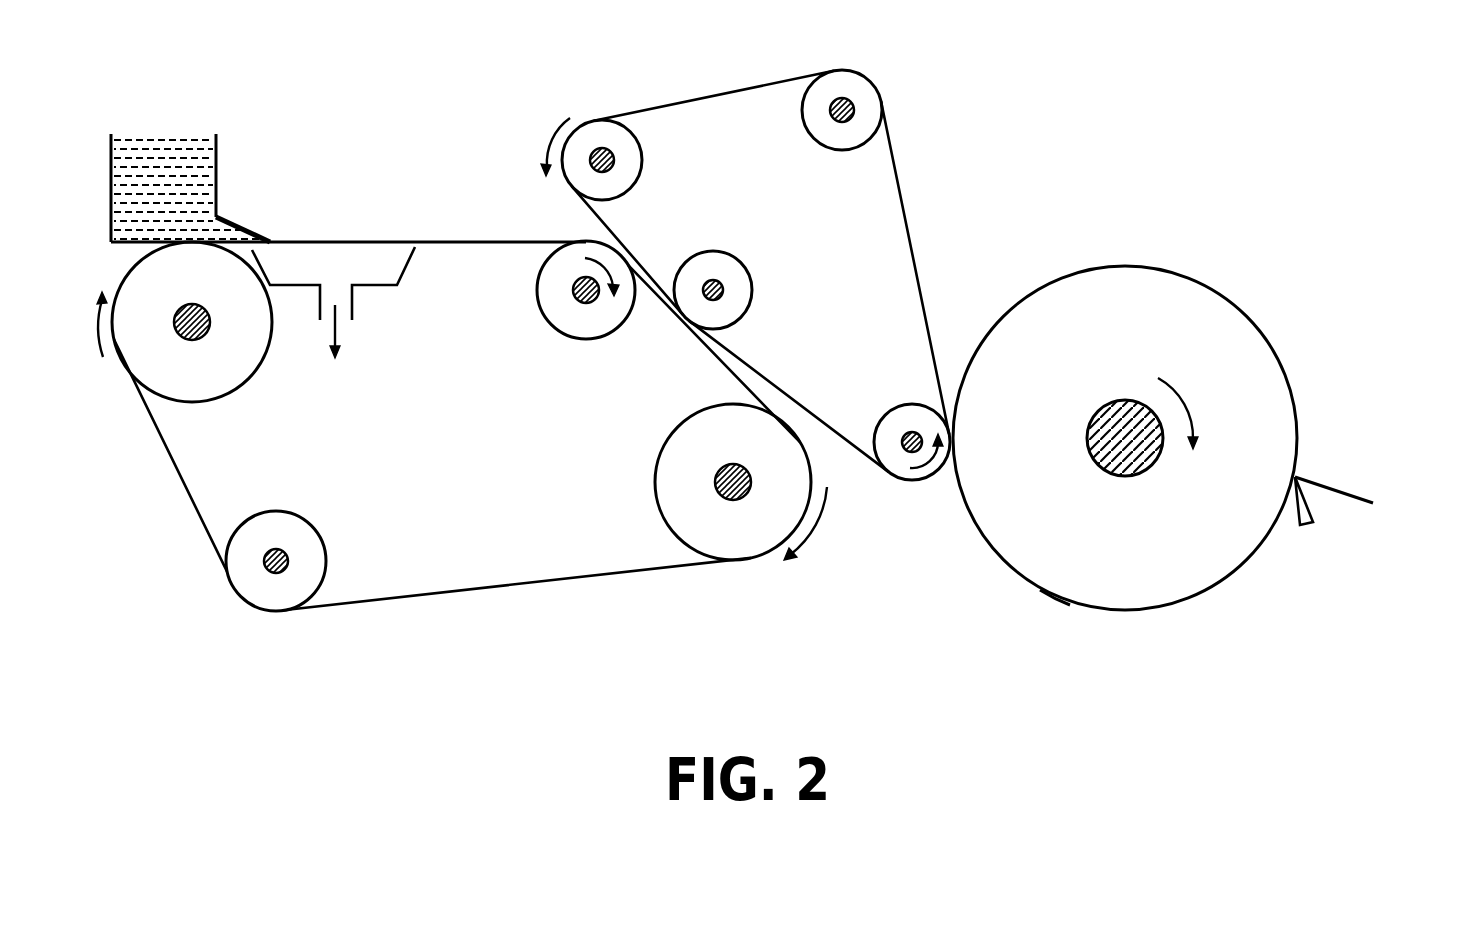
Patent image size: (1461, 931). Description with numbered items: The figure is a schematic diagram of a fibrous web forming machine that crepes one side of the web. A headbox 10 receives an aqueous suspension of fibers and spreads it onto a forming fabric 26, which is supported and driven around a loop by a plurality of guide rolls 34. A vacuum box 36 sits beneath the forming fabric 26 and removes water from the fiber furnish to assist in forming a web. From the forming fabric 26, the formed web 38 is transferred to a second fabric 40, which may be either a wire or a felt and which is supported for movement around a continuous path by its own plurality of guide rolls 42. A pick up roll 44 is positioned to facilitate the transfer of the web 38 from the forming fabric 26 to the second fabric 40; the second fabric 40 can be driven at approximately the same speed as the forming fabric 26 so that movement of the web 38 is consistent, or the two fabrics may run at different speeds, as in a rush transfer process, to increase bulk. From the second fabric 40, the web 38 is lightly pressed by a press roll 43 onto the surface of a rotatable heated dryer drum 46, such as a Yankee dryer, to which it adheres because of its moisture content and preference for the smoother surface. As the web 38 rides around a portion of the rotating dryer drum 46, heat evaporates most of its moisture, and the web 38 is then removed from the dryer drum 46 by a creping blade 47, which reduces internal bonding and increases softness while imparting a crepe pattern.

The headbox 10 is at (216, 178).
The forming fabric 26 is at (415, 242).
The guide rolls 34 is at (218, 365).
The vacuum box 36 is at (397, 285).
The web 38 is at (478, 242).
The second fabric 40 is at (630, 248).
The guide rolls 42 is at (638, 153).
The press roll 43 is at (915, 412).
The pick up roll 44 is at (742, 288).
The dryer drum 46 is at (1057, 578).
The creping blade 47 is at (1300, 525).